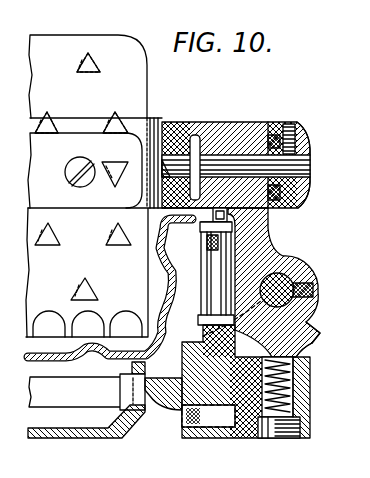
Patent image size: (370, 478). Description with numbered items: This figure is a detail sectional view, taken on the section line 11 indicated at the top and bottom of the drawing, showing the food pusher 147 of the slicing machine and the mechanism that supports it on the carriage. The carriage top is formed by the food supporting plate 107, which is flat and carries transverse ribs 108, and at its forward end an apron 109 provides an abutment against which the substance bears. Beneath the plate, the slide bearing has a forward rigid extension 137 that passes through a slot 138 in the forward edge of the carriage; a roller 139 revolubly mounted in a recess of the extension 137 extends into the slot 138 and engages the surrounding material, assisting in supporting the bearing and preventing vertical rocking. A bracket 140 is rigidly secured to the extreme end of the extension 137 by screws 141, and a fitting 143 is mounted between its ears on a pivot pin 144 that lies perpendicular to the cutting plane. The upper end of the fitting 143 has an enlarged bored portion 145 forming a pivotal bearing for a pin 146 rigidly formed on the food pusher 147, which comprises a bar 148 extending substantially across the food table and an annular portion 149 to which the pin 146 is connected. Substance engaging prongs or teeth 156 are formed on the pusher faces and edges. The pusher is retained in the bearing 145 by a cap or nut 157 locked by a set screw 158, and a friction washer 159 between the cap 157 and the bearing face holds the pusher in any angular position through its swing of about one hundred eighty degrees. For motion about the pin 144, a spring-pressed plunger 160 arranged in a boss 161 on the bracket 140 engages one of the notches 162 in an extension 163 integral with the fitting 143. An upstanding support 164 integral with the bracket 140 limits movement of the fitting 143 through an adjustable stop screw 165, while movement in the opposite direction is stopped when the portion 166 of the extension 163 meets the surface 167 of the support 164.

The section line 11- 11 is at (322, 105).
The food supporting plate 107 is at (45, 354).
The transverse ribs 108 is at (84, 272).
The apron 109 is at (203, 278).
The forward rigid extension 137 is at (53, 400).
The slot 138 is at (113, 410).
The roller 139 is at (120, 388).
The bracket 140 is at (215, 438).
The screws 141 is at (242, 440).
The fitting 143 is at (268, 235).
The pivot pin 144 is at (290, 268).
The enlarged bored portion 145 is at (222, 122).
The pin 146 is at (210, 122).
The food pusher 147 is at (125, 48).
The bar 148 is at (82, 122).
The annular portion 149 is at (175, 122).
The substance engaging prongs or teeth 156 is at (77, 62).
The cap or nut 157 is at (305, 137).
The set screw 158 is at (290, 123).
The friction washer 159 is at (262, 122).
The spring-pressed plunger 160 is at (308, 377).
The boss 161 is at (300, 393).
The notches 162 is at (313, 340).
The extension 163 is at (313, 313).
The upstanding support 164 is at (203, 277).
The adjustable stop screw 165 is at (265, 212).
The portion 166 is at (235, 338).
The surface 167 is at (218, 278).